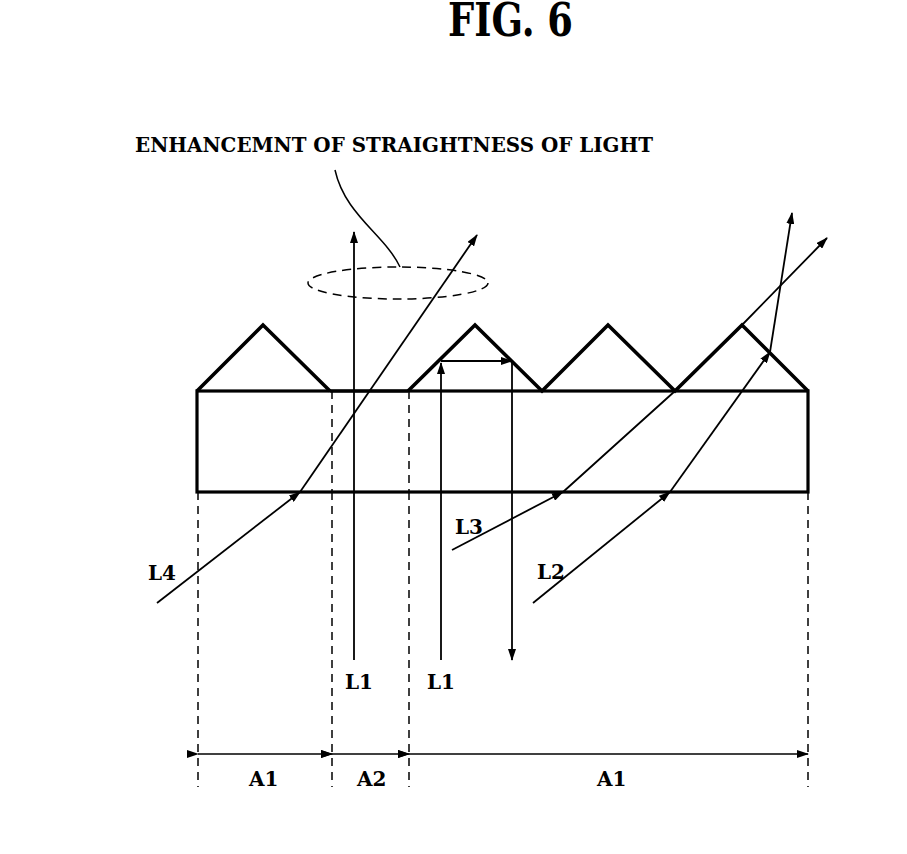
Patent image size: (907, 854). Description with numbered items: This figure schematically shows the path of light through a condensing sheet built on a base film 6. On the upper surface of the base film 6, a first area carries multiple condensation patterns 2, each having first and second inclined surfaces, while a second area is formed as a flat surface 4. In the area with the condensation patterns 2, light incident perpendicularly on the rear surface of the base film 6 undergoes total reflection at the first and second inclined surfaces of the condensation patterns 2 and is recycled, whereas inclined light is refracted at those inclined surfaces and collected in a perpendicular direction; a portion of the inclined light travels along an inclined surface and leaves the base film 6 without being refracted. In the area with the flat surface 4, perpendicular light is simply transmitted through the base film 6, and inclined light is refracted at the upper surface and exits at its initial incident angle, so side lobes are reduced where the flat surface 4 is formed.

The condensation patterns 2 is at (618, 360).
The flat surface 4 is at (338, 390).
The base film 6 is at (792, 440).